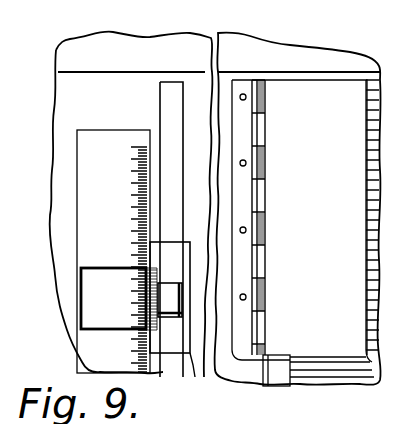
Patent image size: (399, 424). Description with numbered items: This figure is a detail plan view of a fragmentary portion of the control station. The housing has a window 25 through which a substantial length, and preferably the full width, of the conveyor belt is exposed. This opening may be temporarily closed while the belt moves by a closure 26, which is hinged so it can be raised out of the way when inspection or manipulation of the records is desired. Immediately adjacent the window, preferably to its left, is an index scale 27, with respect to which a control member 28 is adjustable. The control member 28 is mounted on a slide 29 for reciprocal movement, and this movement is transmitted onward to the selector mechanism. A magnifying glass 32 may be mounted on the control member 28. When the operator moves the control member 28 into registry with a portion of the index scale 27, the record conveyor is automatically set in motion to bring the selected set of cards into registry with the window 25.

The window 25 is at (298, 71).
The closure 26 is at (333, 93).
The index scale 27 is at (100, 134).
The control member 28 is at (170, 304).
The slide 29 is at (193, 372).
The magnifying glass 32 is at (82, 295).